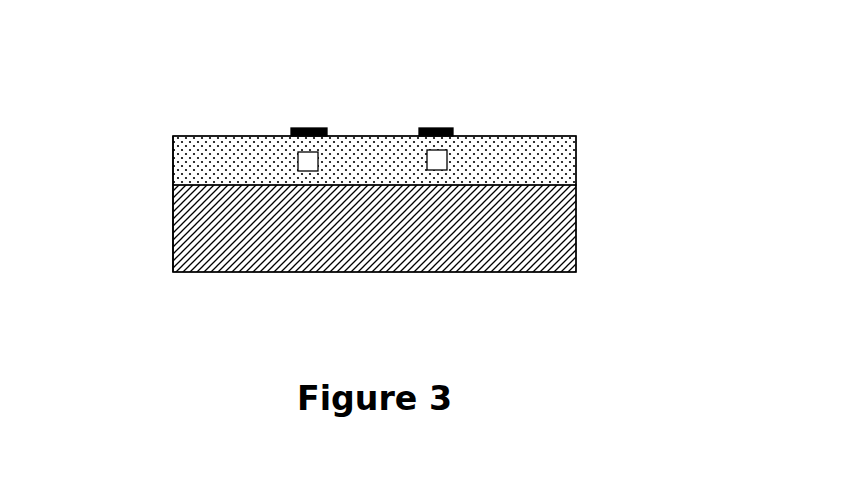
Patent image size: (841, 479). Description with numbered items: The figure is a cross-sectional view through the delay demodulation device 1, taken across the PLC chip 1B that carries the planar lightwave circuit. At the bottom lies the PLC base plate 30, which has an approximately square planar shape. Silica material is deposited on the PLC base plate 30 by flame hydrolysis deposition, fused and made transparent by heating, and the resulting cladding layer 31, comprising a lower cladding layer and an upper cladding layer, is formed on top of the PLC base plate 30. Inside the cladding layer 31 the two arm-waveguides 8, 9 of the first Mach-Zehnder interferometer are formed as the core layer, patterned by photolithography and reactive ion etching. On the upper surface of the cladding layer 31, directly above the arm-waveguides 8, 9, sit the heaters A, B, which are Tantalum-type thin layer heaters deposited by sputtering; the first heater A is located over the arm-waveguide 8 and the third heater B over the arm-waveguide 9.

The delay demodulation device 1 is at (203, 114).
The PLC chip 1B is at (166, 181).
The arm-waveguide 8 is at (318, 162).
The arm-waveguide 9 is at (447, 160).
The first heater A is at (307, 127).
The third heater B is at (426, 127).
The PLC base plate 30 is at (480, 262).
The cladding layer 31 is at (576, 152).